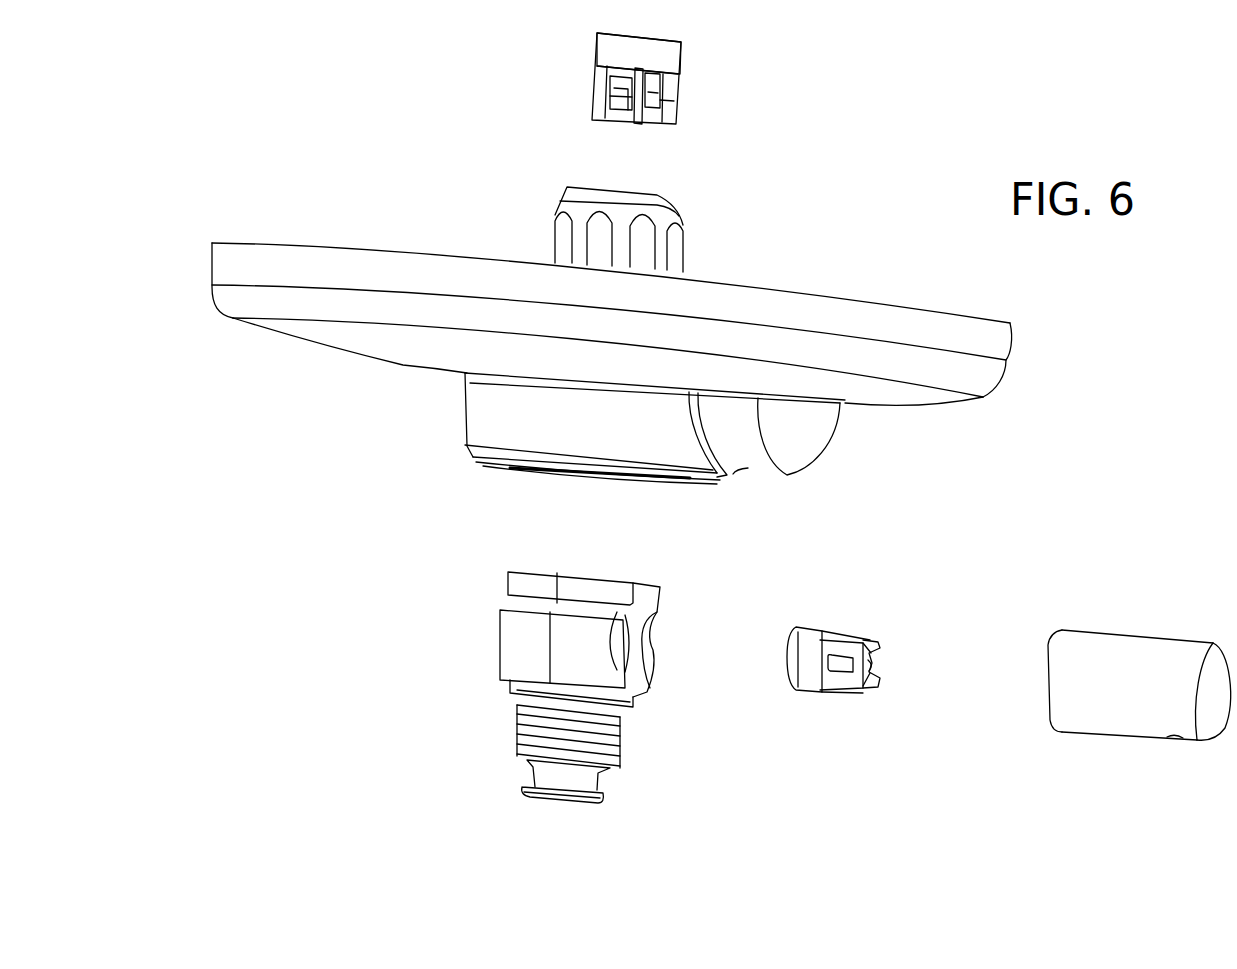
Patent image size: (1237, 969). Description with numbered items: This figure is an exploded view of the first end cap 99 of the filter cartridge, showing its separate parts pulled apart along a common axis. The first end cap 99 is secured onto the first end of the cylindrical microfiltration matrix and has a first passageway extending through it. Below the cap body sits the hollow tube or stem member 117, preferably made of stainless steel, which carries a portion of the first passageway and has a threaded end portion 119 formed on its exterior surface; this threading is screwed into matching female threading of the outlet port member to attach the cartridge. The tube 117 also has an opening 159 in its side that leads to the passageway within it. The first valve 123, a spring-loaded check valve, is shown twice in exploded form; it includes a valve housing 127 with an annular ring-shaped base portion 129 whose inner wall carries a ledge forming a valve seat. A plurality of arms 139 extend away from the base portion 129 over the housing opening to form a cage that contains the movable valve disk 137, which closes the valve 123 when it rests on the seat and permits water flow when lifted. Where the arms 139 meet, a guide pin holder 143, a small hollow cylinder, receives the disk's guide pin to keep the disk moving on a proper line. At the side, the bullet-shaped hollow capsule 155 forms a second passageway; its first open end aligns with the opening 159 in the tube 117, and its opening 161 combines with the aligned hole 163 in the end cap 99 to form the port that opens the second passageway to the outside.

The first end cap 99 is at (276, 131).
The hollow tube or stem member 117 is at (533, 687).
The threaded end portion 119 is at (520, 732).
The first valve 123 is at (517, 117).
The valve housing 127 is at (600, 80).
The annular ring-shaped base portion 129 is at (613, 53).
The movable valve disk 137 is at (653, 80).
The arms 139 is at (600, 102).
The guide pin holder 143 is at (633, 120).
The bullet-shaped hollow capsule 155 is at (1138, 678).
The opening in the tube 159 is at (617, 635).
The opening in the capsule 161 is at (1177, 743).
The hole 163 is at (747, 473).